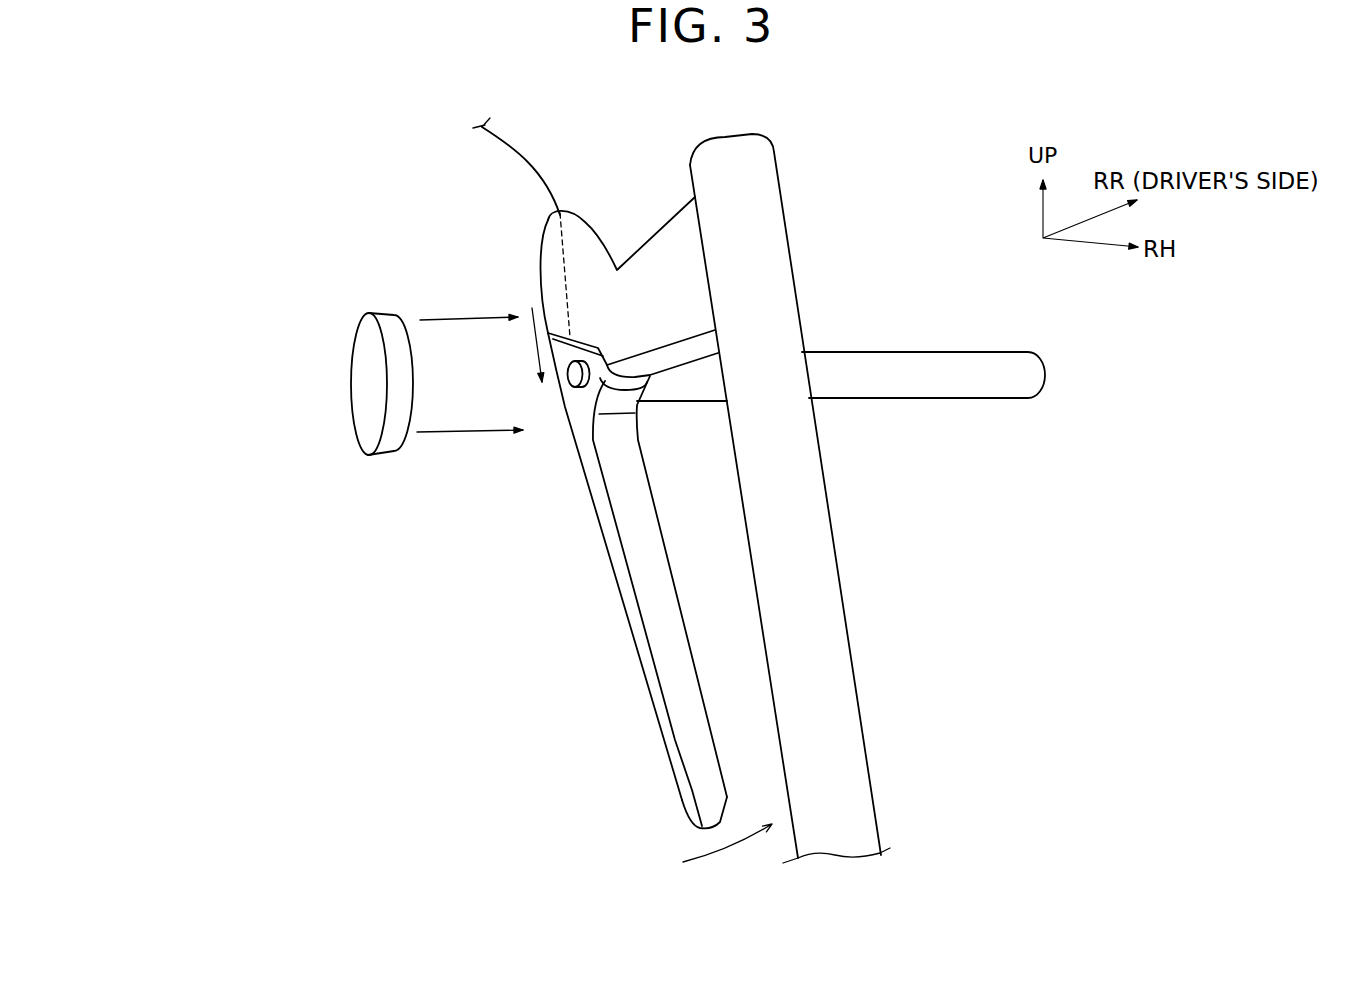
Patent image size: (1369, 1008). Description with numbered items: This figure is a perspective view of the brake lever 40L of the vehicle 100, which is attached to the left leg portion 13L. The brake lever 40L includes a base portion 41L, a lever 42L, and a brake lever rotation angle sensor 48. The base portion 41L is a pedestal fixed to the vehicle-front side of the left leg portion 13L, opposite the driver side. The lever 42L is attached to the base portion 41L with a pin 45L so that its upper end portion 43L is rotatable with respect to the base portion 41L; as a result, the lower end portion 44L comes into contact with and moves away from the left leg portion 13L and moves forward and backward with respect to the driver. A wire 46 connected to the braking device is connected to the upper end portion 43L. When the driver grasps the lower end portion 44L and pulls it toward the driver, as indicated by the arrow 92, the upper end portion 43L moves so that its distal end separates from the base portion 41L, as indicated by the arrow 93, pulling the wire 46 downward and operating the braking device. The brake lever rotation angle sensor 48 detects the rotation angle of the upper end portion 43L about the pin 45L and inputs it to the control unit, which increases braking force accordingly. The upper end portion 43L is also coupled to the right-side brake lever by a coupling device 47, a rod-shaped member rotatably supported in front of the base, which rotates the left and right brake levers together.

The vehicle seat 100 is at (148, 166).
The left leg portion 13L is at (775, 197).
The coupling device 47 is at (932, 352).
The base portion 41L is at (658, 222).
The wire 46 is at (523, 155).
The upper end portion 43L is at (553, 357).
The pin 45L is at (574, 392).
The lever 42L is at (603, 540).
The lower end portion 44L is at (667, 763).
The brake lever 40L is at (545, 493).
The brake lever rotation angle sensor 48 is at (358, 323).
The arrow 93 is at (537, 347).
The arrow 92 is at (730, 852).